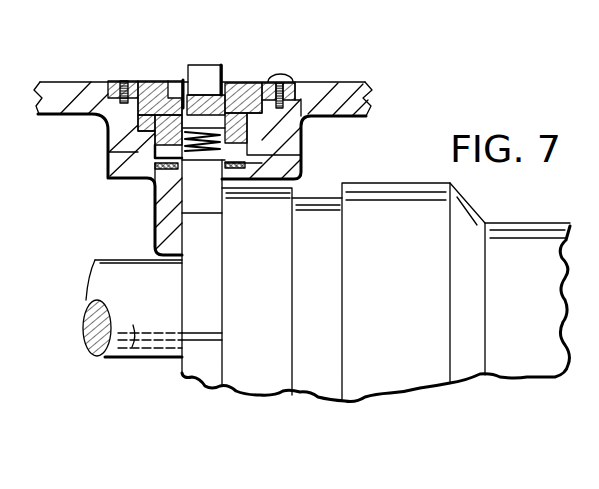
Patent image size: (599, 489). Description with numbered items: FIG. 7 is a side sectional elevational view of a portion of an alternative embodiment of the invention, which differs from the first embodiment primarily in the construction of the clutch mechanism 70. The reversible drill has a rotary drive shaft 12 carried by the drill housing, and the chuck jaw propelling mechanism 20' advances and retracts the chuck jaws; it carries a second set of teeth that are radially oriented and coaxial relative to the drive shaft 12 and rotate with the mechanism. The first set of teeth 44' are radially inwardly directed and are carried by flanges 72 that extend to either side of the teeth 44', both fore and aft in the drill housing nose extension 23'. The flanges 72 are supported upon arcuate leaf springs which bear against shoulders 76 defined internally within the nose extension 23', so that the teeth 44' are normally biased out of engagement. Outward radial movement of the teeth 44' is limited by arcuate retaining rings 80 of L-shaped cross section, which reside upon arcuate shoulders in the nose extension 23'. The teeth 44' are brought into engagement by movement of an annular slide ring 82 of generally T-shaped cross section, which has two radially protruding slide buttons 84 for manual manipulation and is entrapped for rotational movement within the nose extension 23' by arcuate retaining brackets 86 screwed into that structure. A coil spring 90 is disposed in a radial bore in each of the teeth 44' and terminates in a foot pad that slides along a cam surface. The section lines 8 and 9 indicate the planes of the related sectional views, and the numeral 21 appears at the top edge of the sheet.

The rotary drive shaft 12 is at (110, 357).
The chuck jaw propelling mechanism 20' is at (376, 273).
The hub flange 21 is at (84, 3).
The drill housing nose extension 23' is at (220, 83).
The first set of teeth 44' is at (125, 227).
The clutch mechanism 70 is at (263, 72).
The flanges 72 is at (108, 152).
The shoulders 76 is at (301, 168).
The arcuate retaining rings 80 is at (108, 131).
The annular slide ring 82 is at (153, 88).
The slide buttons 84 is at (253, 68).
The arcuate retaining brackets 86 is at (113, 81).
The coil spring 90 is at (190, 124).
The section line 8- 8 is at (118, 33).
The section line 9- 9 is at (225, 72).